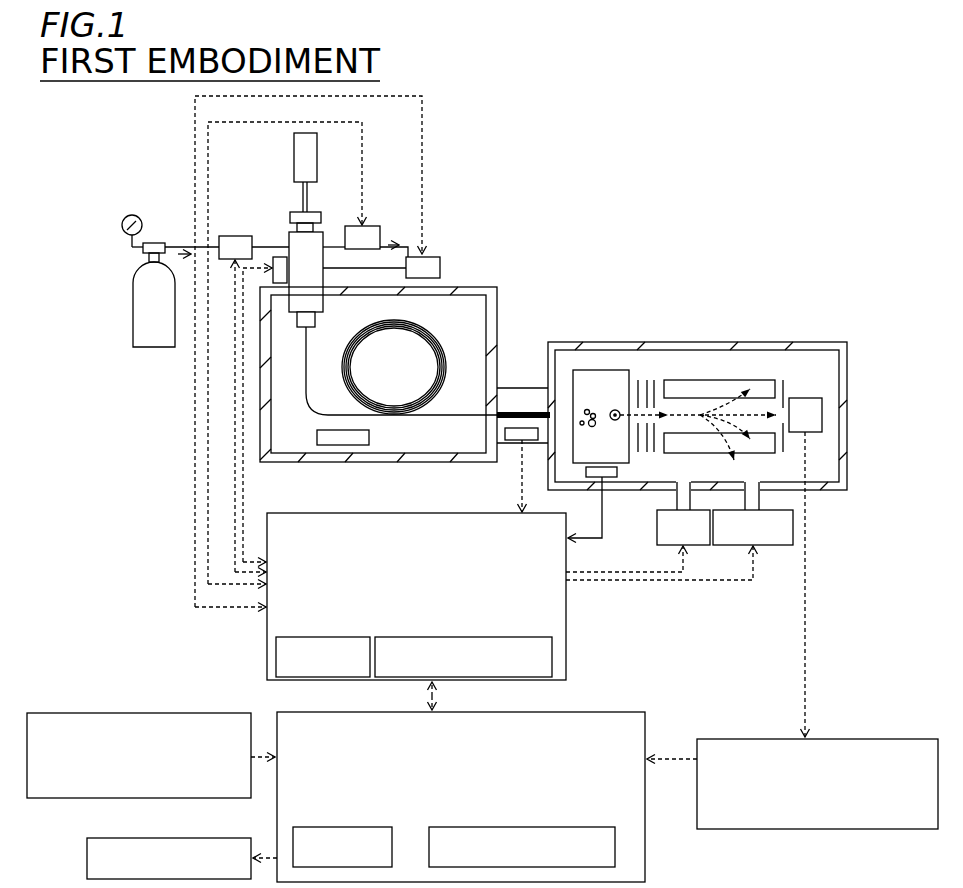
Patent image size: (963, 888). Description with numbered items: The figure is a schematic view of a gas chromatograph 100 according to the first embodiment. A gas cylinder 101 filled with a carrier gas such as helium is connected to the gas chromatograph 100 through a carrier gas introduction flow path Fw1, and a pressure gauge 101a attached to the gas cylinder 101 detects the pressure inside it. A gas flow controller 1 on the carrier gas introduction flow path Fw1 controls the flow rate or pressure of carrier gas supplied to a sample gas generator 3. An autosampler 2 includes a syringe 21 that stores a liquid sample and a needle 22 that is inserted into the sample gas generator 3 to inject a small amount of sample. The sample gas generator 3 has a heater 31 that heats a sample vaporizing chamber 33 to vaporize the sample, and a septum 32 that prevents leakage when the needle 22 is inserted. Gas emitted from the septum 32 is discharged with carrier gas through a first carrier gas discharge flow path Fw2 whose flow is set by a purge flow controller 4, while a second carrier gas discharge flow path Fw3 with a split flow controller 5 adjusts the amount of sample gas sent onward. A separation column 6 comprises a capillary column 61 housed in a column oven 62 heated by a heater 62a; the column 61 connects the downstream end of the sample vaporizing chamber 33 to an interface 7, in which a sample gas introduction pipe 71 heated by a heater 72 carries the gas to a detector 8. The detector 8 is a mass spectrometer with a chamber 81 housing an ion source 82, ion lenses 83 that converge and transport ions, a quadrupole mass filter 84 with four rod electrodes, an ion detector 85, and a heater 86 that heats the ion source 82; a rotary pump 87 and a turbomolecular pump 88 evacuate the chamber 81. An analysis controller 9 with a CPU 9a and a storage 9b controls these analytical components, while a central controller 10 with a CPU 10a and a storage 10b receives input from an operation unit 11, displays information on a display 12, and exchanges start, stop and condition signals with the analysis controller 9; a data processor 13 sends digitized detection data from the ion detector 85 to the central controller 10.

The gas chromatograph 100 is at (727, 208).
The gas cylinder 101 is at (127, 301).
The pressure gauge 101a is at (131, 214).
The carrier gas introduction flow path Fw1 is at (176, 251).
The first carrier gas discharge flow path Fw2 is at (409, 246).
The second carrier gas discharge flow path Fw3 is at (440, 268).
The gas flow controller 1 is at (223, 236).
The autosampler 2 is at (292, 136).
The syringe 21 is at (318, 152).
The needle 22 is at (309, 205).
The sample gas generator 3 is at (327, 229).
The heater 31 is at (270, 247).
The septum 32 is at (280, 256).
The sample vaporizing chamber 33 is at (297, 211).
The purge flow controller 4 is at (368, 226).
The split flow controller 5 is at (438, 257).
The separation column 6 is at (525, 279).
The column 61 is at (432, 338).
The column oven 62 is at (501, 302).
The heater 62a is at (369, 439).
The interface 7 is at (532, 386).
The sample gas introduction pipe 71 is at (513, 412).
The heater 72 is at (507, 443).
The detector 8 is at (806, 340).
The chamber 81 is at (762, 342).
The ion source 82 is at (598, 370).
The ion lenses 83 is at (648, 380).
The quadrupole mass filter 84 is at (690, 380).
The ion detector 85 is at (822, 415).
The heater 86 is at (613, 477).
The rotary pump 87 is at (657, 545).
The turbomolecular pump 88 is at (733, 545).
The analysis controller 9 is at (440, 513).
The central processing unit 9a is at (310, 637).
The storage 9b is at (478, 637).
The central controller 10 is at (622, 712).
The CPU 10a is at (365, 827).
The storage 10b is at (525, 827).
The operation unit 11 is at (52, 713).
The display 12 is at (136, 838).
The data processor 13 is at (868, 739).